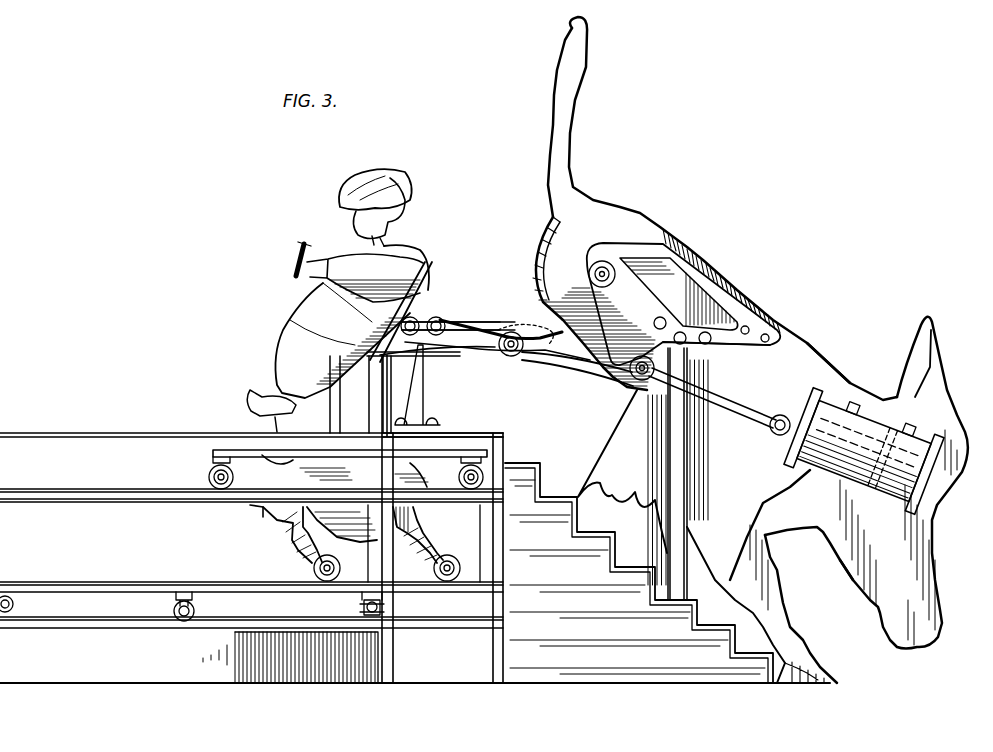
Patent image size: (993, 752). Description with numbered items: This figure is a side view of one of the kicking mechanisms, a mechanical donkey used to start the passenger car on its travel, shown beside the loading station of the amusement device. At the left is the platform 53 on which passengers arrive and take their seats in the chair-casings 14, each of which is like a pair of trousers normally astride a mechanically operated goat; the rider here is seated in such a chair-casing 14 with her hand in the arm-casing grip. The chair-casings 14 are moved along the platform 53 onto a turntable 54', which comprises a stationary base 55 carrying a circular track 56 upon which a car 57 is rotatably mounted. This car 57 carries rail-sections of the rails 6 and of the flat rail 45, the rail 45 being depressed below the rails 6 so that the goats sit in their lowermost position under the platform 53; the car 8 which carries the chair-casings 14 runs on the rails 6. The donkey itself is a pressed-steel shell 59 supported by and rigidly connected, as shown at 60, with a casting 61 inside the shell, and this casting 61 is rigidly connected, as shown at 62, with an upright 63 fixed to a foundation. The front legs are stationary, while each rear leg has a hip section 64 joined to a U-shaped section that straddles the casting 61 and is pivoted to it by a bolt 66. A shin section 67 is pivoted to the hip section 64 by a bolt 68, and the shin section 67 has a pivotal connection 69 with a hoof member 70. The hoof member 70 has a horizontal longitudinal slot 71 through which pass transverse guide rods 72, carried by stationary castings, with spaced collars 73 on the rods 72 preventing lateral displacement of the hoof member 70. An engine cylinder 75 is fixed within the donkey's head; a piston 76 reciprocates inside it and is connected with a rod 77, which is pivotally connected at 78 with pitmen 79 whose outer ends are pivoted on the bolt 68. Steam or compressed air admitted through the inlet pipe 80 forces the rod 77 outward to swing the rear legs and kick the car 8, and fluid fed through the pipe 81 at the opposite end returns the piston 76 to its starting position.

The rails 6 is at (251, 481).
The car 8 is at (230, 450).
The chair-casings 14 is at (424, 418).
The flat rail 45 is at (237, 567).
The platform 53 is at (251, 421).
The turntable 54' is at (251, 559).
The stationary base 55 is at (262, 668).
The circular track 56 is at (310, 606).
The car 57 is at (314, 543).
The shell 59 is at (820, 365).
The rigid connection 60 is at (755, 330).
The casting 61 is at (712, 287).
The rigid connection 62 is at (694, 350).
The upright 63 is at (677, 473).
The hip section 64 is at (612, 218).
The bolt 66 is at (603, 262).
The shin section 67 is at (588, 370).
The bolt 68 is at (634, 380).
The pivotal connection 69 is at (497, 357).
The hoof members 70 is at (465, 312).
The longitudinal slots 71 is at (465, 330).
The guide rods 72 is at (431, 322).
The collars 73 is at (438, 344).
The engine cylinder 75 is at (849, 433).
The piston 76 is at (858, 538).
The rod 77 is at (803, 428).
The pivotal connection 78 is at (770, 430).
The pitmen 79 is at (738, 408).
The inlet pipe 80 is at (924, 474).
The pipe 81 is at (850, 416).